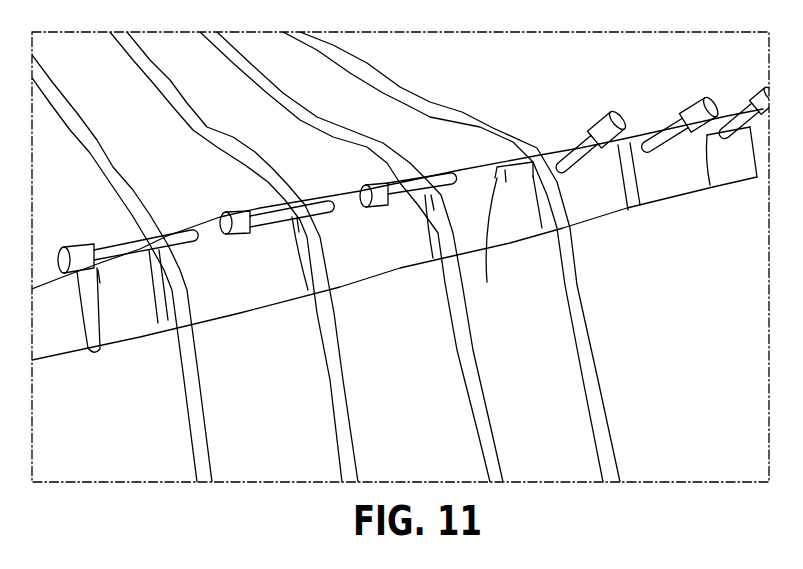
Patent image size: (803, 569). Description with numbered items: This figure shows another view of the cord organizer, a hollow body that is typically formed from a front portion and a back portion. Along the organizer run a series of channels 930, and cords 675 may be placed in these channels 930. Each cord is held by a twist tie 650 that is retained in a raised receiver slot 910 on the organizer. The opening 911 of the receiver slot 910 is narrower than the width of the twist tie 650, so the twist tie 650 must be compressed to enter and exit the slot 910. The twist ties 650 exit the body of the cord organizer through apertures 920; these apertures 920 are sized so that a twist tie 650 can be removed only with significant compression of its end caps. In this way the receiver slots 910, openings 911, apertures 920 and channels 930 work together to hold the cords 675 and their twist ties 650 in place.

The twist tie 650 is at (400, 181).
The cord 675 is at (338, 352).
The receiver slot 910 is at (513, 183).
The opening 911 is at (488, 282).
The aperture 920 is at (463, 176).
The channel 930 is at (317, 238).